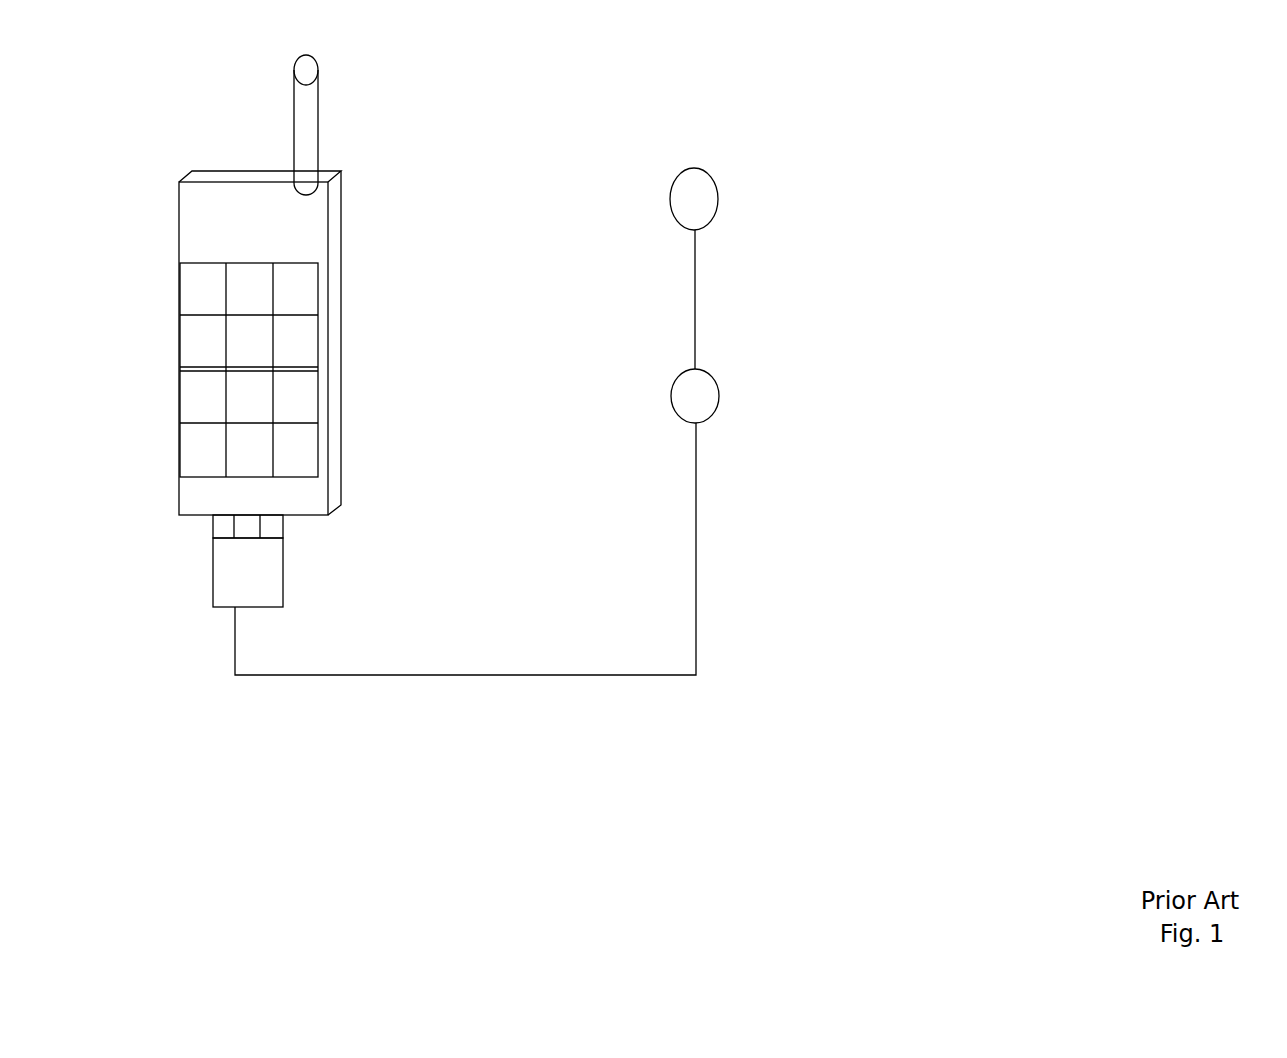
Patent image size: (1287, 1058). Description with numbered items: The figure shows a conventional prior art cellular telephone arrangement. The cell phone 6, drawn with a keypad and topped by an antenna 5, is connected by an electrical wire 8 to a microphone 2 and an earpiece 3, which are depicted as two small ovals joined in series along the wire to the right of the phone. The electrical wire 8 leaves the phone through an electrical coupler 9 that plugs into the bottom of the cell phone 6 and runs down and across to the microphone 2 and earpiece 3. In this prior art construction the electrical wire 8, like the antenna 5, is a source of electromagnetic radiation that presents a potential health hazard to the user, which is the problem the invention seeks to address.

The microphone 2 is at (750, 397).
The earpiece 3 is at (717, 168).
The antenna 5 is at (342, 100).
The cell phone 6 is at (343, 365).
The electrical wire 8 is at (480, 676).
The electrical coupler 9 is at (295, 572).